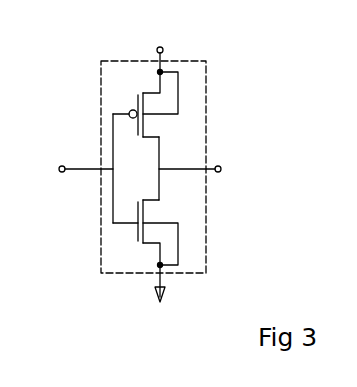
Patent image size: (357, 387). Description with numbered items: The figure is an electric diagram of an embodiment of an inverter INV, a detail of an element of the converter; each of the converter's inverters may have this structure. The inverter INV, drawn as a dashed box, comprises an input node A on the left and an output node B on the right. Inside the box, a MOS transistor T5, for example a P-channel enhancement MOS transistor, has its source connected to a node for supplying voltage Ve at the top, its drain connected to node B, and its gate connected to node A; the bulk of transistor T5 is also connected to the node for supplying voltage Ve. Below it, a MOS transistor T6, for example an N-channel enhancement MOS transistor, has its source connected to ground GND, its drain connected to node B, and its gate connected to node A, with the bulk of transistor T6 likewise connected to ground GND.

The inverter INV is at (229, 68).
The supply voltage Ve is at (163, 49).
The MOS transistor T5 is at (150, 93).
The MOS transistor T6 is at (148, 245).
The input node A is at (59, 167).
The output node B is at (221, 166).
The ground GND is at (163, 283).